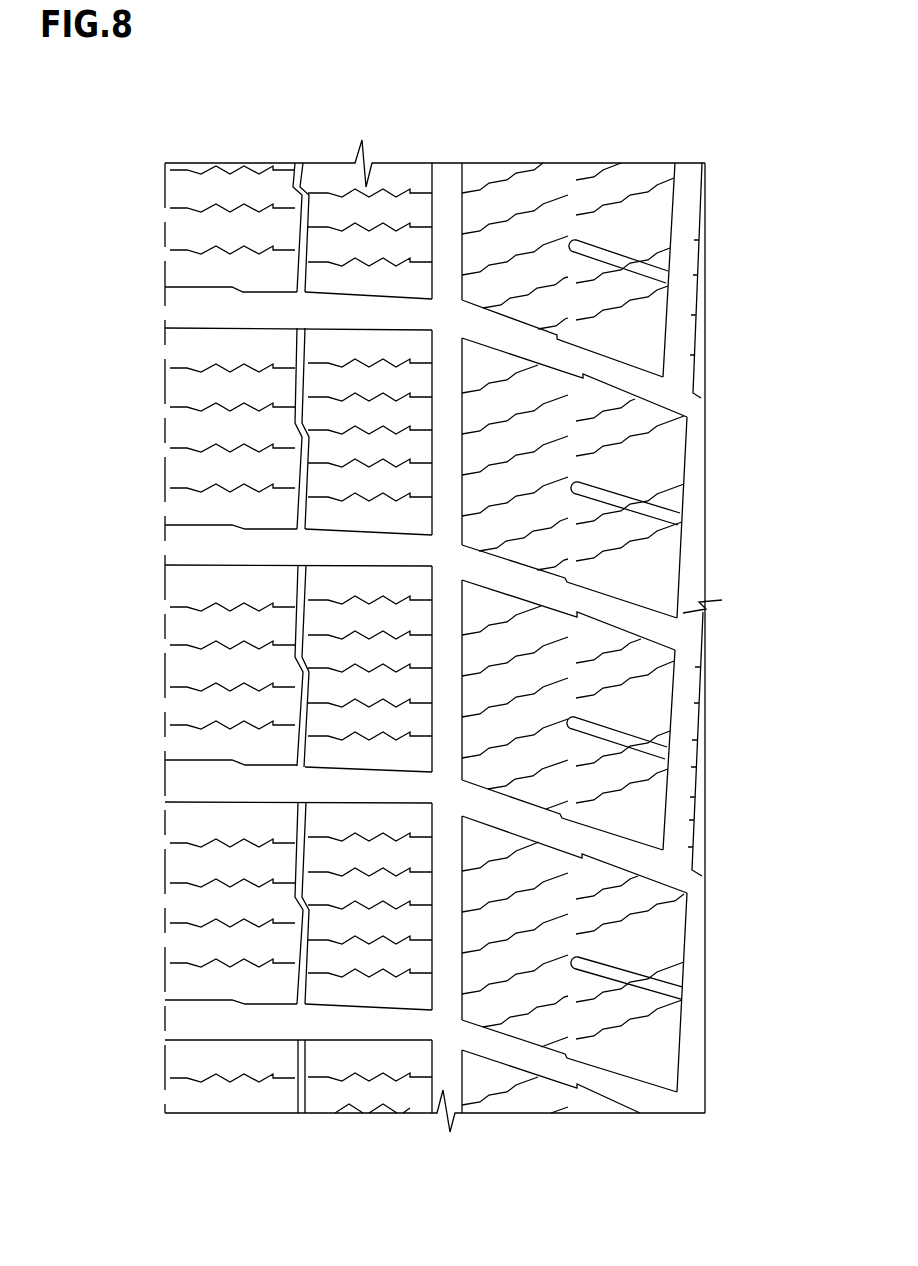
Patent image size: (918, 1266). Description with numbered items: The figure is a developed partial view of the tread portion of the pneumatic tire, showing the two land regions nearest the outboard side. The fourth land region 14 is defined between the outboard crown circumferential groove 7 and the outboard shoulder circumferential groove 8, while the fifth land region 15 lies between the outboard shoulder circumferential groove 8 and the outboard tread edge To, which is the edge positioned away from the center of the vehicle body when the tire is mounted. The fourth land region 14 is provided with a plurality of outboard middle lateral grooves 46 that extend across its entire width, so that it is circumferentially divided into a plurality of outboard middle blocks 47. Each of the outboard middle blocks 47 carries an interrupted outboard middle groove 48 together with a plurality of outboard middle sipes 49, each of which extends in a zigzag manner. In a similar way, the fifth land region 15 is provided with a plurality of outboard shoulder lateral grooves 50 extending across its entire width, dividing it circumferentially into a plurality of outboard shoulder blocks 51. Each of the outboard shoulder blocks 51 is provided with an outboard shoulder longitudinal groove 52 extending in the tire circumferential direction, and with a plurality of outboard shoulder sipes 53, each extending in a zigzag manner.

The outboard crown circumferential groove 7 is at (688, 195).
The outboard shoulder circumferential groove 8 is at (447, 200).
The fourth land region 14 is at (563, 195).
The fifth land region 15 is at (262, 203).
The outboard middle lateral grooves 46 is at (572, 357).
The outboard middle blocks 47 is at (540, 245).
The interrupted outboard middle groove 48 is at (618, 262).
The outboard middle sipes 49 is at (613, 487).
The outboard shoulder lateral grooves 50 is at (215, 310).
The outboard shoulder blocks 51 is at (347, 215).
The outboard shoulder longitudinal groove 52 is at (300, 640).
The outboard shoulder sipes 53 is at (200, 452).
The outboard tread edge To is at (163, 222).